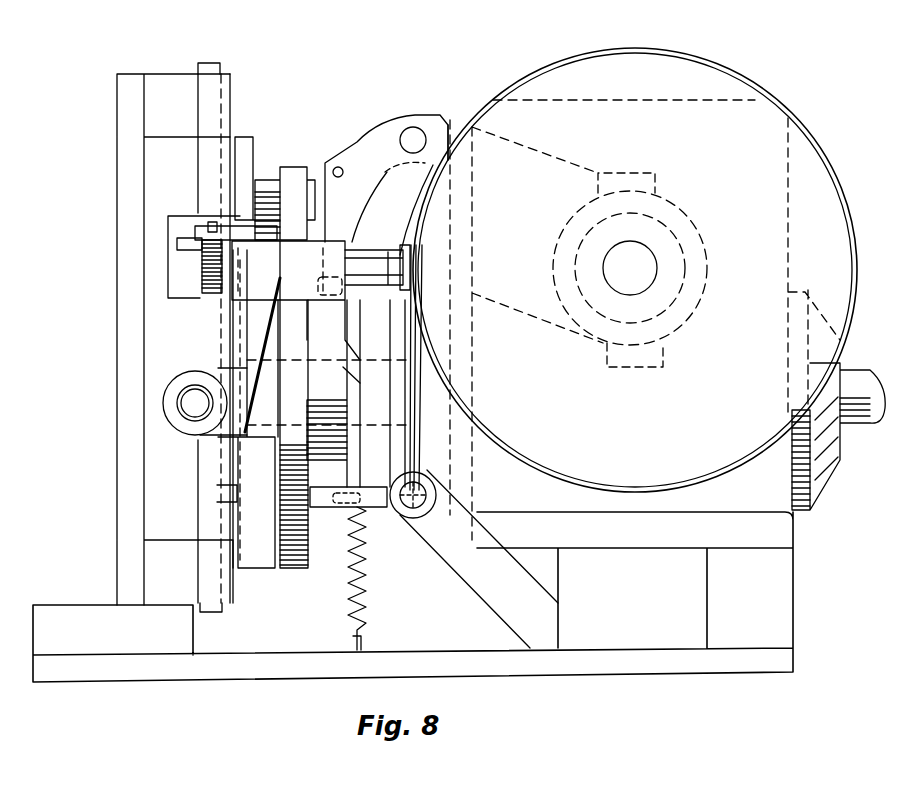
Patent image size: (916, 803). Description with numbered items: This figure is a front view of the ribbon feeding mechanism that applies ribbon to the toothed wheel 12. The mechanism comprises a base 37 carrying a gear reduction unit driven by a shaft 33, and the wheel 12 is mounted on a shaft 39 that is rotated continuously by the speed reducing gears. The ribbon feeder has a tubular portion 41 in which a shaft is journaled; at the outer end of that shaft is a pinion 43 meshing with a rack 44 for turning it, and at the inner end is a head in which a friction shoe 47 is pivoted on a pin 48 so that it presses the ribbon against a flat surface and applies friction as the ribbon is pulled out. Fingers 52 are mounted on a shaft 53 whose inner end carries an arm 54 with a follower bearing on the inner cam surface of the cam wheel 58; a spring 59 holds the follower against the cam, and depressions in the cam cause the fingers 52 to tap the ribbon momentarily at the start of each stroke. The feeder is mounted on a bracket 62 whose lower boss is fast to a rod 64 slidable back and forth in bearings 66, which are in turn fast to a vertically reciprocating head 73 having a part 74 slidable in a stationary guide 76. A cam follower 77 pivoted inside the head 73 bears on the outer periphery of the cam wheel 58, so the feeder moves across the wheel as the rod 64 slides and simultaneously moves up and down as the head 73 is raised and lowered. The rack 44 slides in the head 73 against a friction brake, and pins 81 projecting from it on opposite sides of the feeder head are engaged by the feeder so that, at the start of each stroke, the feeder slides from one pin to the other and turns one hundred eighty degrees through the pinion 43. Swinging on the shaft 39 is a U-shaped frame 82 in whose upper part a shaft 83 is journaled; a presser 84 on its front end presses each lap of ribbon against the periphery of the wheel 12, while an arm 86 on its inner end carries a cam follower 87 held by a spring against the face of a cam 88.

The toothed wheel 12 is at (816, 160).
The shaft 33 is at (855, 385).
The base 37 is at (780, 668).
The shaft 39 is at (640, 272).
The tubular portion 41 is at (260, 275).
The pinion 43 is at (207, 293).
The rack 44 is at (200, 245).
The friction shoe 47 is at (380, 255).
The pin 48 is at (383, 300).
The fingers 52 is at (430, 318).
The shaft 53 is at (420, 500).
The arm 54 is at (380, 507).
The cam wheel 58 is at (286, 570).
The spring 59 is at (347, 590).
The bracket 62 is at (235, 338).
The rod 64 is at (184, 405).
The bearings 66 is at (175, 395).
The head 73 is at (244, 138).
The part 74 is at (209, 63).
The guide 76 is at (230, 90).
The cam follower 77 is at (293, 173).
The pins 81 is at (205, 225).
The U-shaped frame 82 is at (449, 124).
The shaft 83 is at (413, 128).
The presser 84 is at (398, 190).
The arm 86 is at (358, 150).
The cam follower 87 is at (331, 300).
The cam 88 is at (355, 505).